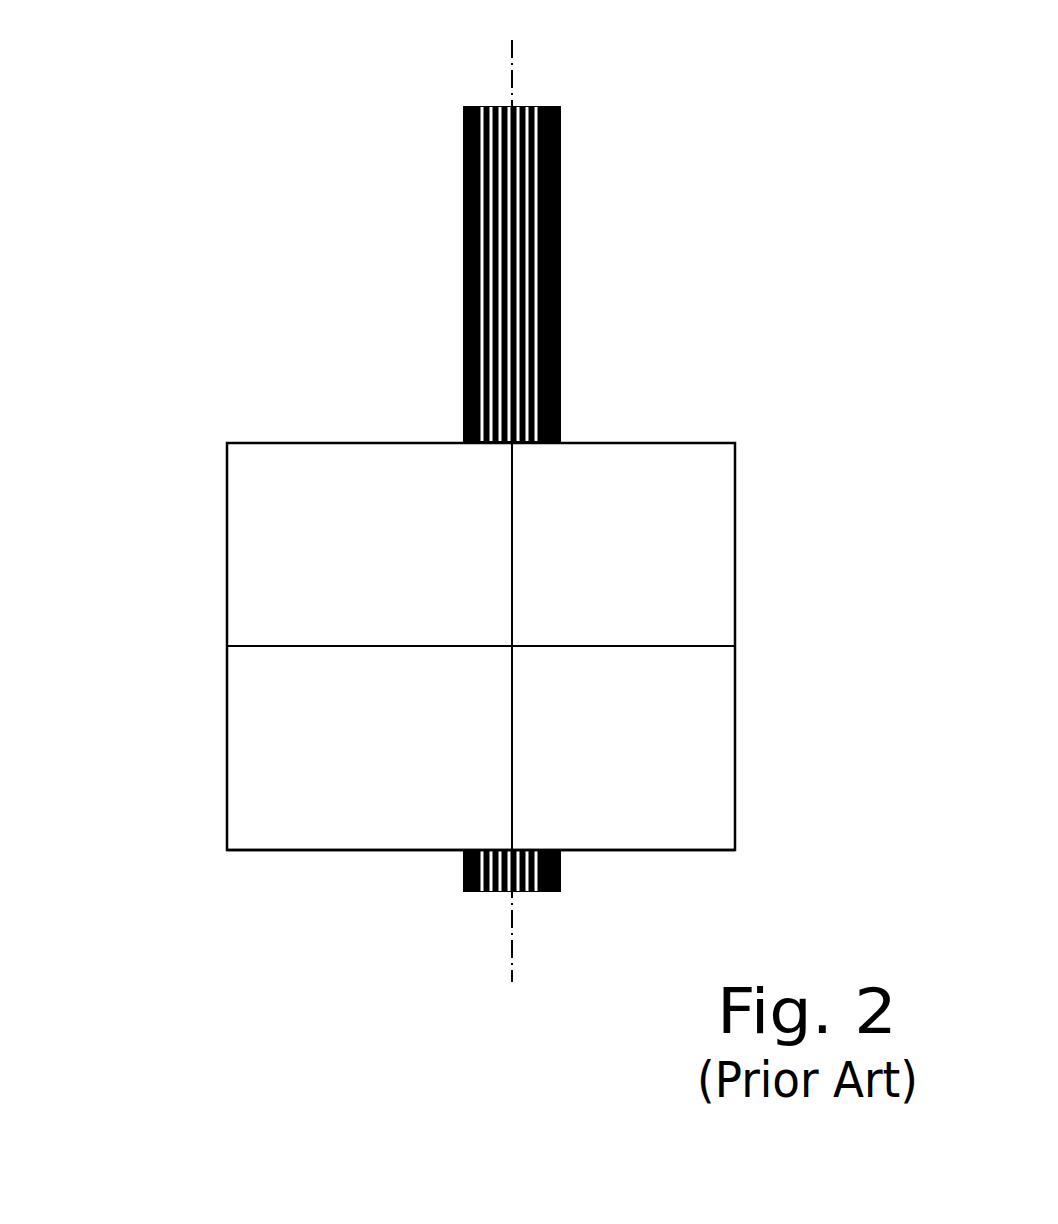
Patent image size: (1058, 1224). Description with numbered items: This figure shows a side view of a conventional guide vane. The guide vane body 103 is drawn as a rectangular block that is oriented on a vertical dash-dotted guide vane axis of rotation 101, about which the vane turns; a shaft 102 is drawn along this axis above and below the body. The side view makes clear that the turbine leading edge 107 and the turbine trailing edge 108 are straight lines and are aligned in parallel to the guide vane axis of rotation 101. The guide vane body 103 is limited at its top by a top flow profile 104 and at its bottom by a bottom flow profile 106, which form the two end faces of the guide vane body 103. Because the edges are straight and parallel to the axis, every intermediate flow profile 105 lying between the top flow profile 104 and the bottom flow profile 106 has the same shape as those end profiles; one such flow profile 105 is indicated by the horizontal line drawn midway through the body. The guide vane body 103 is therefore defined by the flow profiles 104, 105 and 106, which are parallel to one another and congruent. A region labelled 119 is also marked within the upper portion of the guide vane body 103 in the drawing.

The guide vane axis of rotation 101 is at (513, 70).
The shaft 102 is at (561, 199).
The guide vane body 103 is at (545, 487).
The top flow profile 104 is at (702, 441).
The flow profile 105 is at (278, 647).
The bottom flow profile 106 is at (278, 850).
The turbine leading edge 107 is at (735, 672).
The turbine trailing edge 108 is at (227, 511).
The rotor region 119 is at (369, 544).